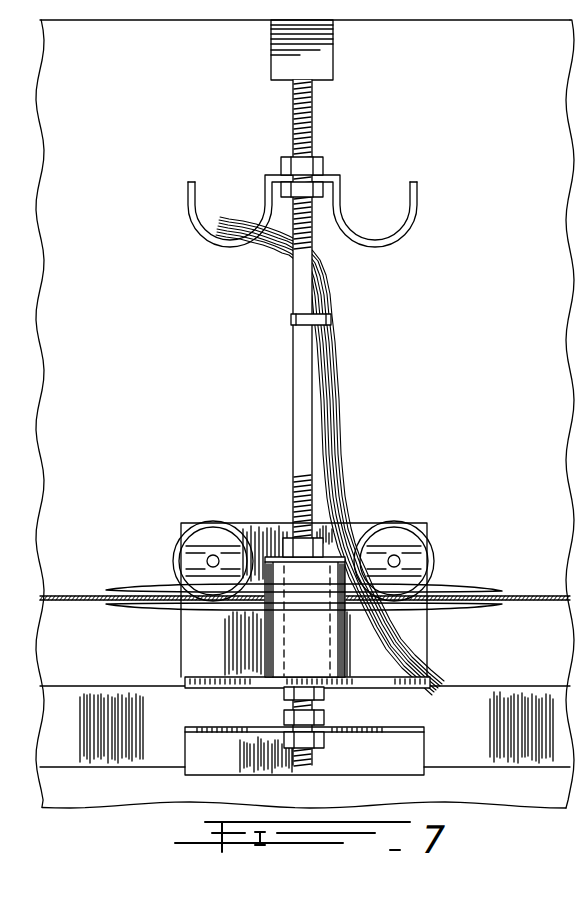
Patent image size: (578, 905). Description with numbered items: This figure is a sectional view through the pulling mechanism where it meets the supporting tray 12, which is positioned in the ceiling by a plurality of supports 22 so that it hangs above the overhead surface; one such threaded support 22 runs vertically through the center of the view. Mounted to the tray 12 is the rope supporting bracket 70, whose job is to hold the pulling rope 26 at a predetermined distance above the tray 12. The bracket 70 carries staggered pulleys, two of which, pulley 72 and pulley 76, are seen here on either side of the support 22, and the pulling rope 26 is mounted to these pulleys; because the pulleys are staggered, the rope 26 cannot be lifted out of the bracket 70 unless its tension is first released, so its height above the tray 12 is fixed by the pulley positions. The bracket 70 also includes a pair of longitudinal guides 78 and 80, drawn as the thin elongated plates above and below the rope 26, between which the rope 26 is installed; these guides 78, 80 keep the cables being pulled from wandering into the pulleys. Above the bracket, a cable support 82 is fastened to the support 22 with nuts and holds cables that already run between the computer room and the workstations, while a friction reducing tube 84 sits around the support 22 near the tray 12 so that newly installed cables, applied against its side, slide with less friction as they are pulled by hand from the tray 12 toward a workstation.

The supporting tray 12 is at (153, 767).
The support 22 is at (302, 347).
The pulling rope 26 is at (535, 593).
The rope supporting bracket 70 is at (218, 505).
The pulley 72 is at (218, 540).
The pulley 76 is at (392, 538).
The longitudinal guide 78 is at (445, 580).
The longitudinal guide 80 is at (352, 610).
The cable support 82 is at (318, 182).
The friction reducing tube 84 is at (313, 657).